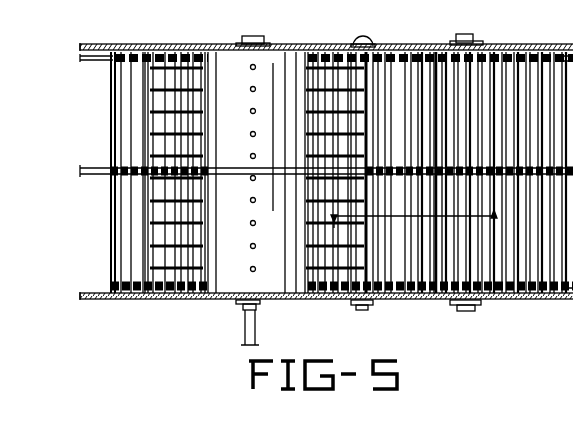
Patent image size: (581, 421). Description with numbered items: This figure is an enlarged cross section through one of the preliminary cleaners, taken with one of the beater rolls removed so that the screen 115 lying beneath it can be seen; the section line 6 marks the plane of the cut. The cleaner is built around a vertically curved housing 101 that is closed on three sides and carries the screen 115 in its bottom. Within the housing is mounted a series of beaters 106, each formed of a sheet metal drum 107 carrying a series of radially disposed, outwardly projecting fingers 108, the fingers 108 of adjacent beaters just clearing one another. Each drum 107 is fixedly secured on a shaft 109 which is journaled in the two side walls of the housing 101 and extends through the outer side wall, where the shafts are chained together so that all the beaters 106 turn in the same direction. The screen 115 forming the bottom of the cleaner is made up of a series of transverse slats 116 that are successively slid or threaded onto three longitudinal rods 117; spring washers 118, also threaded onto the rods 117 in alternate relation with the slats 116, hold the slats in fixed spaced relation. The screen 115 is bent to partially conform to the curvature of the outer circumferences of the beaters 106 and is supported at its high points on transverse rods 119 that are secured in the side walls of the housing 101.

The section line 6- 6 is at (416, 231).
The housing 101 is at (508, 42).
The beater 106 is at (213, 274).
The sheet metal drum 107 is at (265, 276).
The fingers 108 is at (235, 110).
The shaft 109 is at (240, 323).
The screen 115 is at (428, 68).
The transverse slats 116 is at (563, 284).
The longitudinal rods 117 is at (93, 53).
The spring washers 118 is at (122, 290).
The transverse rods 119 is at (355, 295).